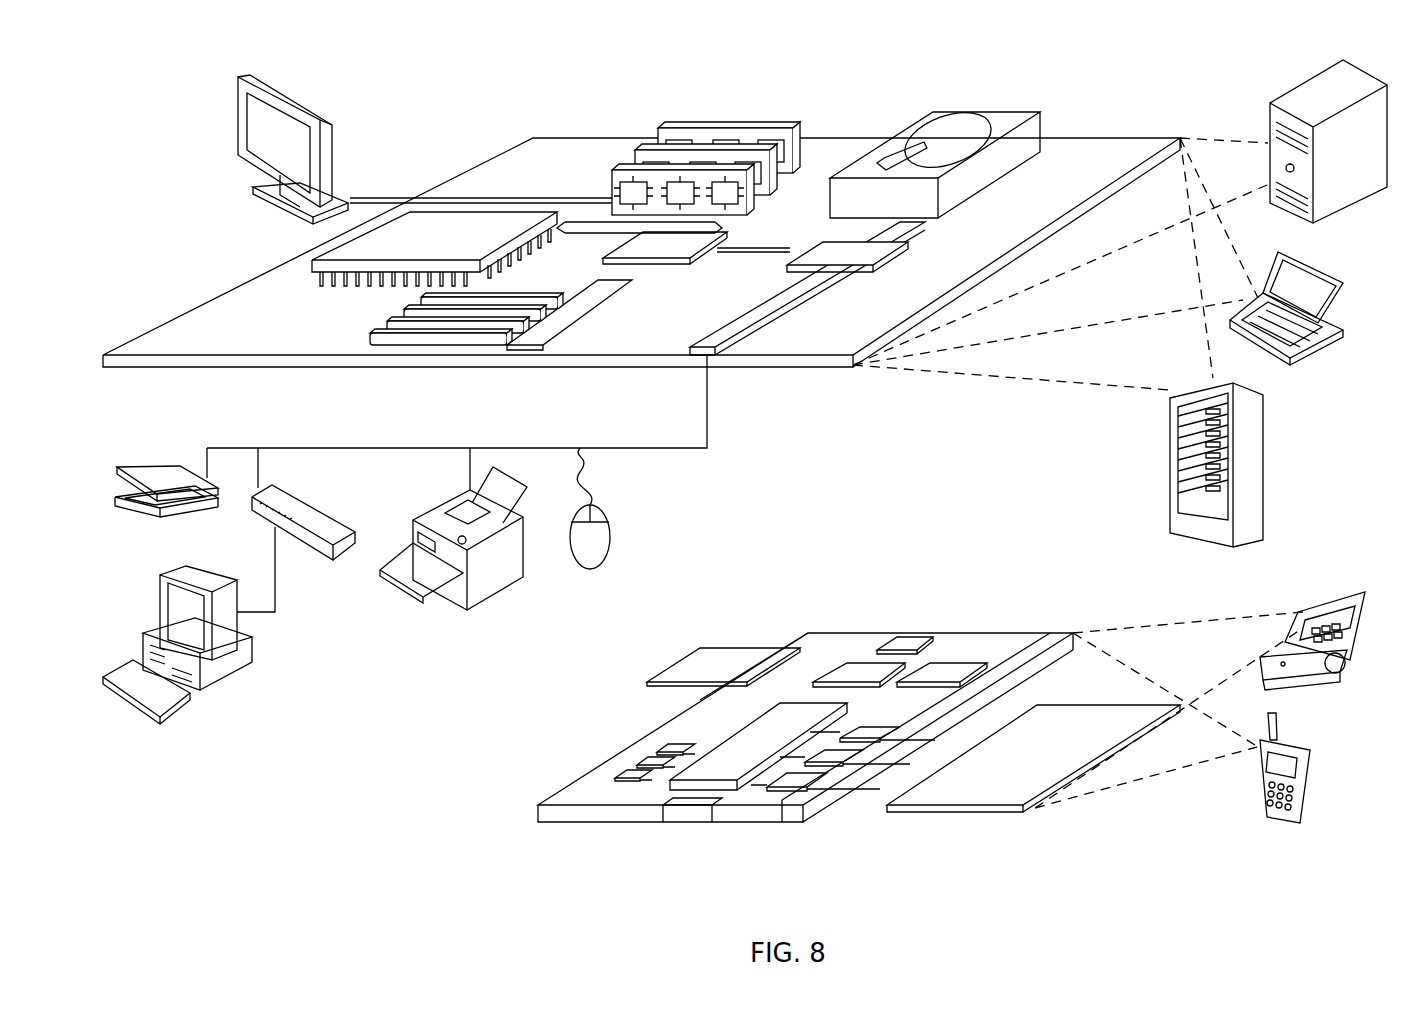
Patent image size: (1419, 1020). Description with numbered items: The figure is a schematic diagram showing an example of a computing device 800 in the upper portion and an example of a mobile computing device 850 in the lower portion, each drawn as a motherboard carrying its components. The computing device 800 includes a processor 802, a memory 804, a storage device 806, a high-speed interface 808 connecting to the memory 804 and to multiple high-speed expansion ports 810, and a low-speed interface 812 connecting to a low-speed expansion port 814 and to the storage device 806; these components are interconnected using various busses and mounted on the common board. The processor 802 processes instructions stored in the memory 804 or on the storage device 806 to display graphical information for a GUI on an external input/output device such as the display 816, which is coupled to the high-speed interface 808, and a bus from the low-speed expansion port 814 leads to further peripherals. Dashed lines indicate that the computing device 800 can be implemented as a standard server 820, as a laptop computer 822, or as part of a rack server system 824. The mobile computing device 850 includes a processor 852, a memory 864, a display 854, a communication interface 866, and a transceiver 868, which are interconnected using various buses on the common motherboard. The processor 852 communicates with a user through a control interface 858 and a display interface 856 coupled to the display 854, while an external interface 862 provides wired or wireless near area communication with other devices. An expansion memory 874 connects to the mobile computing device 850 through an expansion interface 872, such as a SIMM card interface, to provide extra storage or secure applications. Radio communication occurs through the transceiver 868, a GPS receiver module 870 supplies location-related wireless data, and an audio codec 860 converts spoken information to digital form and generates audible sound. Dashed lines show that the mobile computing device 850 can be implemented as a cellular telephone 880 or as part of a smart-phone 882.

The computing device 800 is at (453, 103).
The processor 802 is at (320, 265).
The memory 804 is at (670, 138).
The storage device 806 is at (932, 112).
The high-speed interface 808 is at (637, 243).
The high-speed expansion ports 810 is at (387, 326).
The low-speed interface 812 is at (827, 252).
The low-speed expansion port 814 is at (708, 358).
The display 816 is at (245, 75).
The standard server 820 is at (1267, 120).
The laptop computer 822 is at (1340, 283).
The rack server system 824 is at (1170, 498).
The mobile computing device 850 is at (510, 822).
The processor 852 is at (730, 770).
The display 854 is at (985, 798).
The display interface 856 is at (810, 778).
The control interface 858 is at (840, 755).
The audio codec 860 is at (870, 733).
The external interface 862 is at (690, 790).
The memory 864 is at (635, 770).
The communication interface 866 is at (860, 672).
The transceiver 868 is at (940, 672).
The GPS receiver module 870 is at (905, 640).
The expansion interface 872 is at (785, 645).
The expansion memory 874 is at (700, 650).
The cellular telephone 880 is at (1312, 590).
The smart-phone 882 is at (1257, 768).